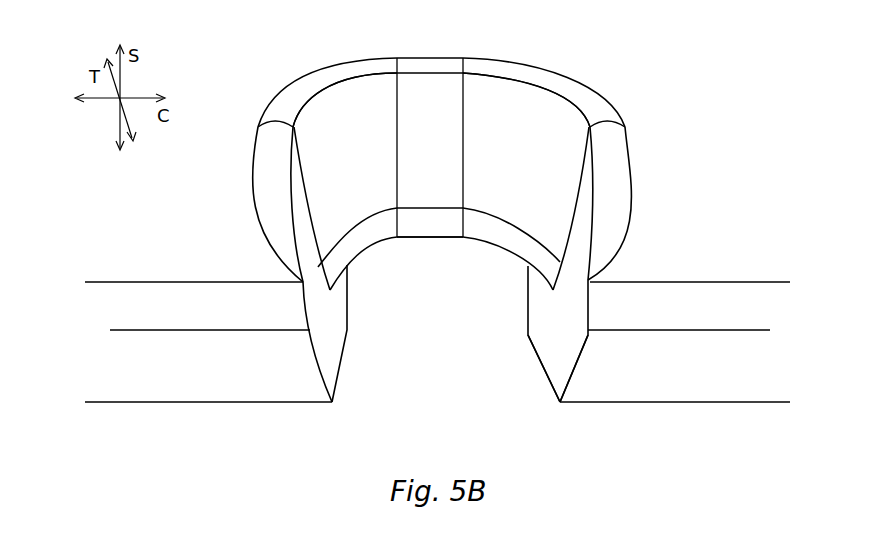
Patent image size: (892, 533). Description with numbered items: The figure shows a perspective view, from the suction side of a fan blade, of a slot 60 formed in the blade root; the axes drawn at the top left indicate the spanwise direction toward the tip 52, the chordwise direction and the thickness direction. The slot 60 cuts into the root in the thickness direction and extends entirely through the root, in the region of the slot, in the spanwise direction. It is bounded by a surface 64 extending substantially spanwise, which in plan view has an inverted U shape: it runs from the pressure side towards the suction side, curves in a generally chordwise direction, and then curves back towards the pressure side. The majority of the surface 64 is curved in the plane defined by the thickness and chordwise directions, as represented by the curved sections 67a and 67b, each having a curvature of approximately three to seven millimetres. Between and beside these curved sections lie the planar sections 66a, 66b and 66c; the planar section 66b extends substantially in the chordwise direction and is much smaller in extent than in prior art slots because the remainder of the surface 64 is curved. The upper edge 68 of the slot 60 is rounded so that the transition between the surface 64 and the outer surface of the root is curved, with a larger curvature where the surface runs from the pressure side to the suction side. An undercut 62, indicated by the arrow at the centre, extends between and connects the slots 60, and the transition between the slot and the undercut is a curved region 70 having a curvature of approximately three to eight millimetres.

The tip 52 is at (210, 255).
The slot 60 is at (532, 384).
The undercut 62 is at (443, 258).
The surface 64 is at (558, 363).
The planar section 66a is at (560, 333).
The planar section 66b is at (445, 85).
The planar section 66c is at (335, 334).
The curved section 67a is at (563, 110).
The curved section 67b is at (321, 103).
The upper edge 68 is at (612, 177).
The curved region 70 is at (353, 243).